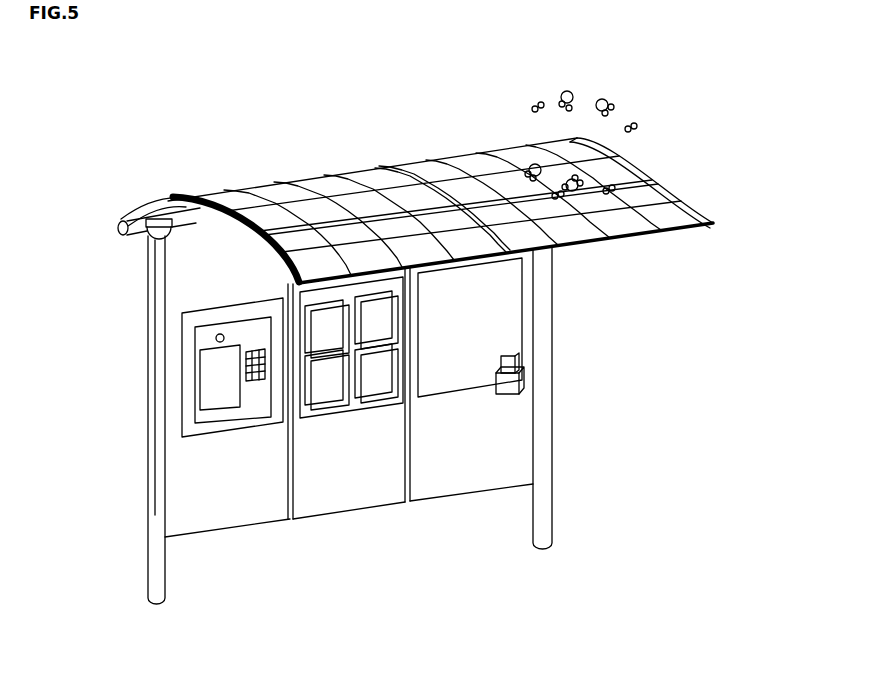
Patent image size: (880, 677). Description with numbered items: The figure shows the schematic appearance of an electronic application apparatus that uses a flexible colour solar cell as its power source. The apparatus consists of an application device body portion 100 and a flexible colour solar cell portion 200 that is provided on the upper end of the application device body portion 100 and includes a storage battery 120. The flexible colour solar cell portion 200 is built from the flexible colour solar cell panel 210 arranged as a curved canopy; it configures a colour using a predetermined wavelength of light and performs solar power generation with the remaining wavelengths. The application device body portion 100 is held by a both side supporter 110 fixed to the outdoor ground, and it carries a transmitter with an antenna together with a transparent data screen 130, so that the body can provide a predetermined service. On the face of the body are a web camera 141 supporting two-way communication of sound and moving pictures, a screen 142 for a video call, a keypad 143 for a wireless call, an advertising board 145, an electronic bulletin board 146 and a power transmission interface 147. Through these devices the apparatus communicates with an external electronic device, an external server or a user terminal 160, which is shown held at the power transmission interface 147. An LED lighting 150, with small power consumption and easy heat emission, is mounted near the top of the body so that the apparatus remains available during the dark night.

The application device body portion 100 is at (90, 228).
The both side supporter 110 is at (160, 567).
The storage battery 120 is at (157, 427).
The data screen 130 is at (190, 287).
The web camera 141 is at (212, 342).
The screen 142 is at (215, 410).
The keypad 143 is at (258, 380).
The advertising board 145 is at (336, 405).
The electronic bulletin board 146 is at (452, 375).
The power transmission interface 147 is at (518, 386).
The LED lighting 150 is at (165, 238).
The user terminal 160 is at (512, 366).
The flexible colour solar cell portion 200 is at (454, 177).
The flexible colour solar cell panel 210 is at (482, 210).